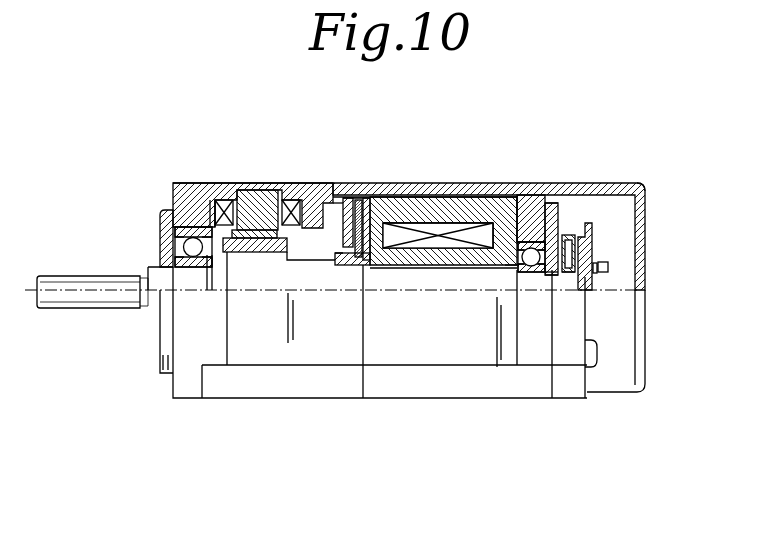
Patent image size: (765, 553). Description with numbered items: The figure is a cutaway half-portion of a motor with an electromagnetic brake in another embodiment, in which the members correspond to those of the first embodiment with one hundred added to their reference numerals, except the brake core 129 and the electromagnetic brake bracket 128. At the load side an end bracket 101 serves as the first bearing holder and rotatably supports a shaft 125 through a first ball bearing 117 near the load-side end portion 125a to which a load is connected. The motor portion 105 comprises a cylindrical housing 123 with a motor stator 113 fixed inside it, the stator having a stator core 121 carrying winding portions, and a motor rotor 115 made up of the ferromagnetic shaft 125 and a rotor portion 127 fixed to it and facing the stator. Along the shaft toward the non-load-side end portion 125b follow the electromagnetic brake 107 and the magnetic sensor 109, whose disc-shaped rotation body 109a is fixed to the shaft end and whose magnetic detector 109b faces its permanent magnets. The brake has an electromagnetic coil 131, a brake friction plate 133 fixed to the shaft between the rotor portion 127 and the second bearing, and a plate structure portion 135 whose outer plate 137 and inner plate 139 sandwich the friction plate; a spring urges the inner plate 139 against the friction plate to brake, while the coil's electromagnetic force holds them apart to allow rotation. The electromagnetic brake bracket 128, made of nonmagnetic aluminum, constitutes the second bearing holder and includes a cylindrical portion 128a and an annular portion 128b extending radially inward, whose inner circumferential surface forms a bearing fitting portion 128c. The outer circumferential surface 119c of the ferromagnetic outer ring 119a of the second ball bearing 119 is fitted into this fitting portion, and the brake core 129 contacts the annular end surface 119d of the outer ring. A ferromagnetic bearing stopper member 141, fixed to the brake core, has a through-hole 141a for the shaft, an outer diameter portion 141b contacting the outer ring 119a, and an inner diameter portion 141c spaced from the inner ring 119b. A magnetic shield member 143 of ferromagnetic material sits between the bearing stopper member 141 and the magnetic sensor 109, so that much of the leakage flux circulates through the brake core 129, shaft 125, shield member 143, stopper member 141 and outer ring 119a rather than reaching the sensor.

The end bracket 101 is at (140, 213).
The motor portion 105 is at (245, 190).
The electromagnetic brake 107 is at (385, 193).
The magnetic sensor 109 is at (598, 233).
The rotation body 109a is at (596, 274).
The magnetic detector 109b is at (609, 267).
The motor stator 113 is at (257, 192).
The motor rotor 115 is at (240, 272).
The first ball bearing 117 is at (172, 262).
The second ball bearing 119 is at (525, 278).
The outer ring 119a is at (523, 238).
The inner ring 119b is at (546, 275).
The outer circumferential surface 119c is at (562, 201).
The annular end surface 119d is at (507, 272).
The stator core 121 is at (268, 188).
The cylindrical housing 123 is at (195, 192).
The shaft 125 is at (387, 270).
The load-side end portion 125a is at (72, 300).
The non-load-side end portion 125b is at (587, 393).
The rotor portion 127 is at (253, 255).
The electromagnetic brake bracket 128 is at (463, 191).
The cylindrical portion 128a is at (433, 205).
The annular portion 128b is at (530, 205).
The bearing fitting portion 128c is at (548, 185).
The brake core 129 is at (403, 196).
The electromagnetic coil 131 is at (452, 249).
The brake friction plate 133 is at (361, 268).
The plate structure portion 135 is at (332, 247).
The outer plate 137 is at (357, 262).
The inner plate 139 is at (367, 263).
The bearing stopper member 141 is at (558, 222).
The through-hole 141a is at (560, 276).
The outer diameter portion 141b is at (642, 187).
The inner diameter portion 141c is at (565, 273).
The magnetic shield member 143 is at (578, 246).